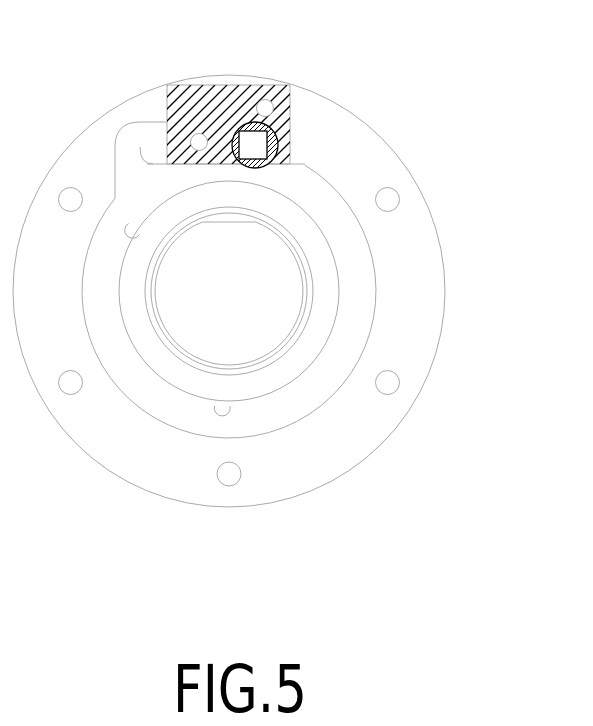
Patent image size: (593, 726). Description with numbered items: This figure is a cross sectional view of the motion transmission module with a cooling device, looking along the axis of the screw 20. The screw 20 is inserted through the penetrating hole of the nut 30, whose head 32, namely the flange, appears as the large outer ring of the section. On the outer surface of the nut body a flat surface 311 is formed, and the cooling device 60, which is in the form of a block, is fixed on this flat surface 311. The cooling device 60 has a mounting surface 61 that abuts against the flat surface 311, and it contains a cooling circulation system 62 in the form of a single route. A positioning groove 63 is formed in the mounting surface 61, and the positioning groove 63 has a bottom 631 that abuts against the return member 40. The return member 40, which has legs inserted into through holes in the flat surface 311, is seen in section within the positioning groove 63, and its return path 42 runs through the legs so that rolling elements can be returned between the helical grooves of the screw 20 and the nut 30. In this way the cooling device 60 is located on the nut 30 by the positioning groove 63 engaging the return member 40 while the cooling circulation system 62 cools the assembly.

The screw 20 is at (265, 315).
The nut 30 is at (390, 143).
The head 32 is at (407, 245).
The return member 40 is at (252, 163).
The return path 42 is at (262, 150).
The cooling device 60 is at (247, 98).
The mounting surface 61 is at (183, 163).
The flat surface 311 is at (183, 163).
The cooling circulation system 62 is at (199, 151).
The positioning groove 63 is at (275, 160).
The bottom 631 is at (247, 138).